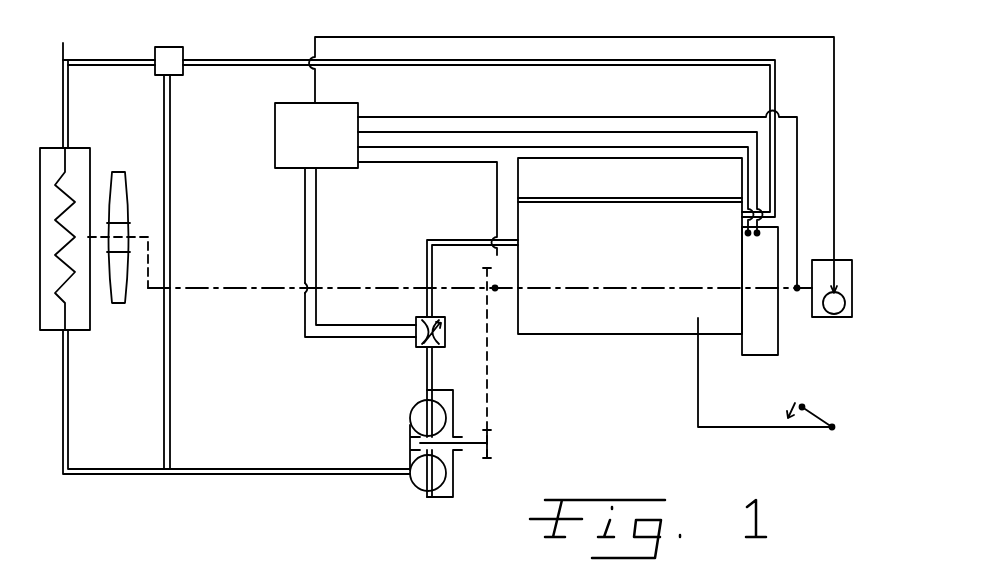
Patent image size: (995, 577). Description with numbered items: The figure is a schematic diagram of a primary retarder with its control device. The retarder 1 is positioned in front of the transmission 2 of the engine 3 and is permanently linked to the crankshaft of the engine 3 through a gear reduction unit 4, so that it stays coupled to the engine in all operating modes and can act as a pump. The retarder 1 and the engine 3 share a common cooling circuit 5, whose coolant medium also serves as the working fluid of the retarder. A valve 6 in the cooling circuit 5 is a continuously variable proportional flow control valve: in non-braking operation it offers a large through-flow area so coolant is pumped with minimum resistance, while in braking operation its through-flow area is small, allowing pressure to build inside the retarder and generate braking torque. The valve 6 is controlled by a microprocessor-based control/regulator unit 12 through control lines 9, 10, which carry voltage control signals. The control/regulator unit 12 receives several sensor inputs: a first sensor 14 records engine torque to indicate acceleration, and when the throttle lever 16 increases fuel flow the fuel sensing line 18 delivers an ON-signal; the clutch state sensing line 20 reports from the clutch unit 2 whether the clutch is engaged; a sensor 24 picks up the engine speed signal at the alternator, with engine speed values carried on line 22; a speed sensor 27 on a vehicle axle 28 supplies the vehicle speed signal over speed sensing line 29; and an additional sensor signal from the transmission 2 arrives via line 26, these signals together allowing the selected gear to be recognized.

The retarder 1 is at (415, 487).
The transmission 2 is at (760, 345).
The engine 3 is at (607, 334).
The gear reduction unit 4 is at (487, 388).
The cooling circuit 5 is at (170, 383).
The valve 6 is at (420, 347).
The control line 9 is at (305, 210).
The control line 10 is at (318, 238).
The control/regulator unit 12 is at (275, 146).
The first sensor 14 is at (800, 302).
The throttle lever 16 is at (822, 412).
The fuel sensing line 18 is at (417, 116).
The clutch state sensing line 20 is at (440, 132).
The line 22 is at (392, 162).
The sensor 24 is at (495, 290).
The line 26 is at (428, 148).
The speed sensor 27 is at (835, 290).
The vehicle axle 28 is at (833, 315).
The speed sensing line 29 is at (525, 37).